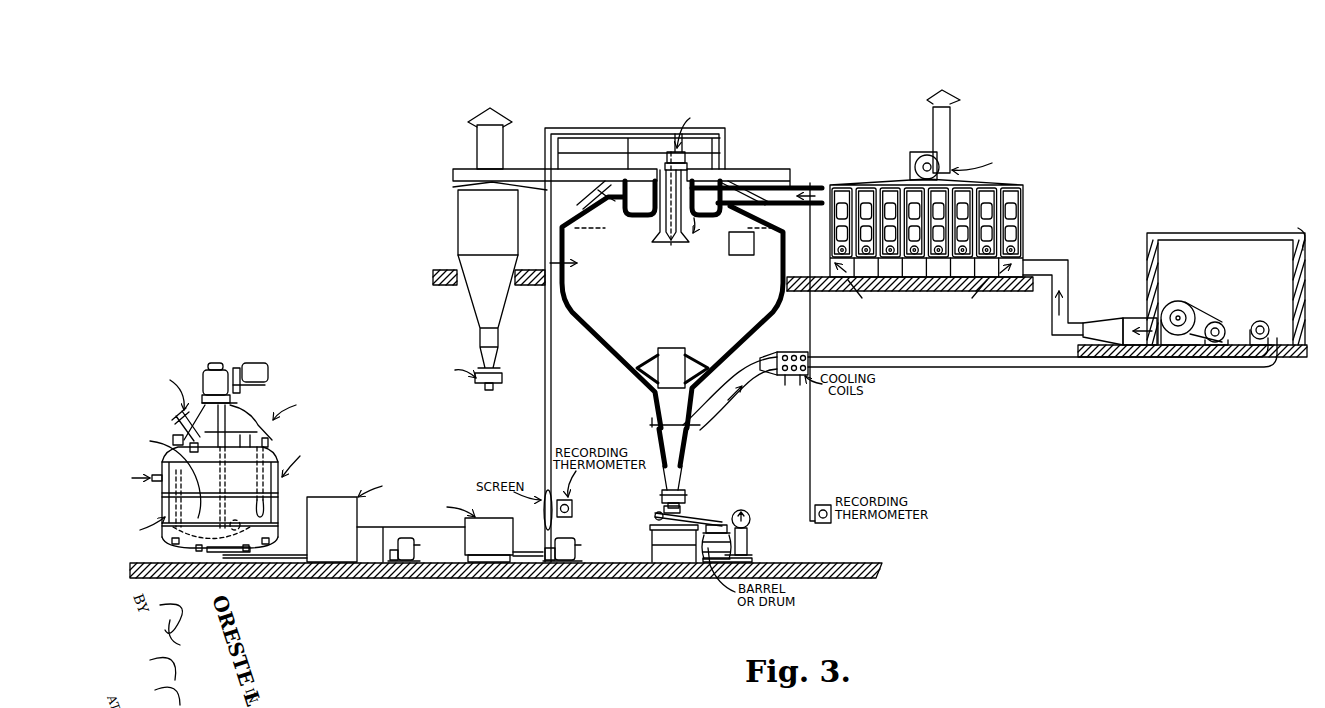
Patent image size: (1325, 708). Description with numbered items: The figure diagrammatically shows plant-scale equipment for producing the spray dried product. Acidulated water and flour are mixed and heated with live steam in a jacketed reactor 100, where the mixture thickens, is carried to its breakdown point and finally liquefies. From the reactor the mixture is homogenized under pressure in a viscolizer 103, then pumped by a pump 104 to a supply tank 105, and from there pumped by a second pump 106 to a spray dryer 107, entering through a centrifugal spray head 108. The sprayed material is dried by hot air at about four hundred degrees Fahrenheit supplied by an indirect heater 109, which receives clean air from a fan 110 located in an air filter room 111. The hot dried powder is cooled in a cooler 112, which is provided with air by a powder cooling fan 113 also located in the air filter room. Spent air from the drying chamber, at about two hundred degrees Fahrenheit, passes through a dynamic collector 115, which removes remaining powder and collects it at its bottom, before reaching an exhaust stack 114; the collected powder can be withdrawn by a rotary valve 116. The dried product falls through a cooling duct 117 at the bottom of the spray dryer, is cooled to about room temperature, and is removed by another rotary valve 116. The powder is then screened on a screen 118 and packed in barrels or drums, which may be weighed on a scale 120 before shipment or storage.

The jacketed reactor 100 is at (148, 508).
The viscolizer 103 is at (364, 516).
The pump 104 is at (405, 563).
The supply tank 105 is at (460, 529).
The pump 106 is at (568, 546).
The spray dryer 107 is at (703, 296).
The centrifugal spray head 108 is at (656, 238).
The indirect heater 109 is at (928, 215).
The fan 110 is at (1185, 305).
The air filter room 111 is at (1226, 281).
The cooler 112 is at (645, 396).
The powder cooling fan 113 is at (1278, 342).
The exhaust stack 114 is at (472, 124).
The dynamic collector 115 is at (455, 212).
The rotary valve 116 is at (659, 497).
The cooling duct 117 is at (683, 473).
The screen 118 is at (717, 518).
The scale 120 is at (749, 543).